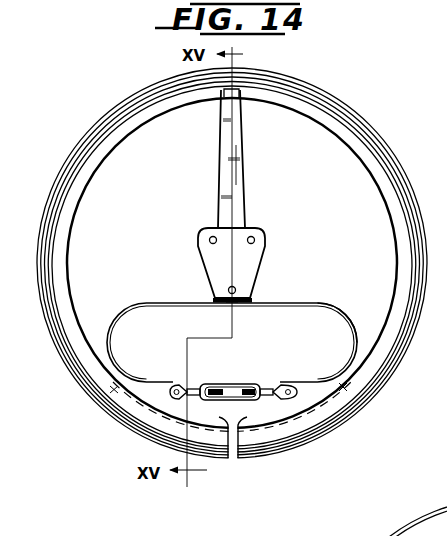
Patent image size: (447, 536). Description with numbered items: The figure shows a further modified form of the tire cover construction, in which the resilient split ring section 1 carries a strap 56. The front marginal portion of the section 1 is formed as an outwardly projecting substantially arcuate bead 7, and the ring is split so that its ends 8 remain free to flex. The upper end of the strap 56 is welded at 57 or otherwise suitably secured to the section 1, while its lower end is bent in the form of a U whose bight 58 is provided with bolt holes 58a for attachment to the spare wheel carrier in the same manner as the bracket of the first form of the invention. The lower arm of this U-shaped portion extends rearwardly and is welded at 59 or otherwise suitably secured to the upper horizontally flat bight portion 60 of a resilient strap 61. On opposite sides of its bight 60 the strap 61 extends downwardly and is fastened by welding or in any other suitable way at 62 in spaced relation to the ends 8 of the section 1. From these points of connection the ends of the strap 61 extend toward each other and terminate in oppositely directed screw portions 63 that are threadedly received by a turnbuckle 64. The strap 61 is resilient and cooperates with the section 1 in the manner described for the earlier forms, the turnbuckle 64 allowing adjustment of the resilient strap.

The section 1 is at (88, 200).
The bead 7 is at (62, 174).
The ends of the ring 8 is at (233, 432).
The strap 56 is at (246, 186).
The weld 57 is at (222, 93).
The bight 58 is at (257, 261).
The holes in plate 58a is at (232, 286).
The weld 59 is at (226, 302).
The bight portion 60 is at (263, 303).
The resilient strap 61 is at (363, 285).
The fastening points 62 is at (105, 400).
The screw portions 63 is at (281, 385).
The turnbuckle 64 is at (251, 384).